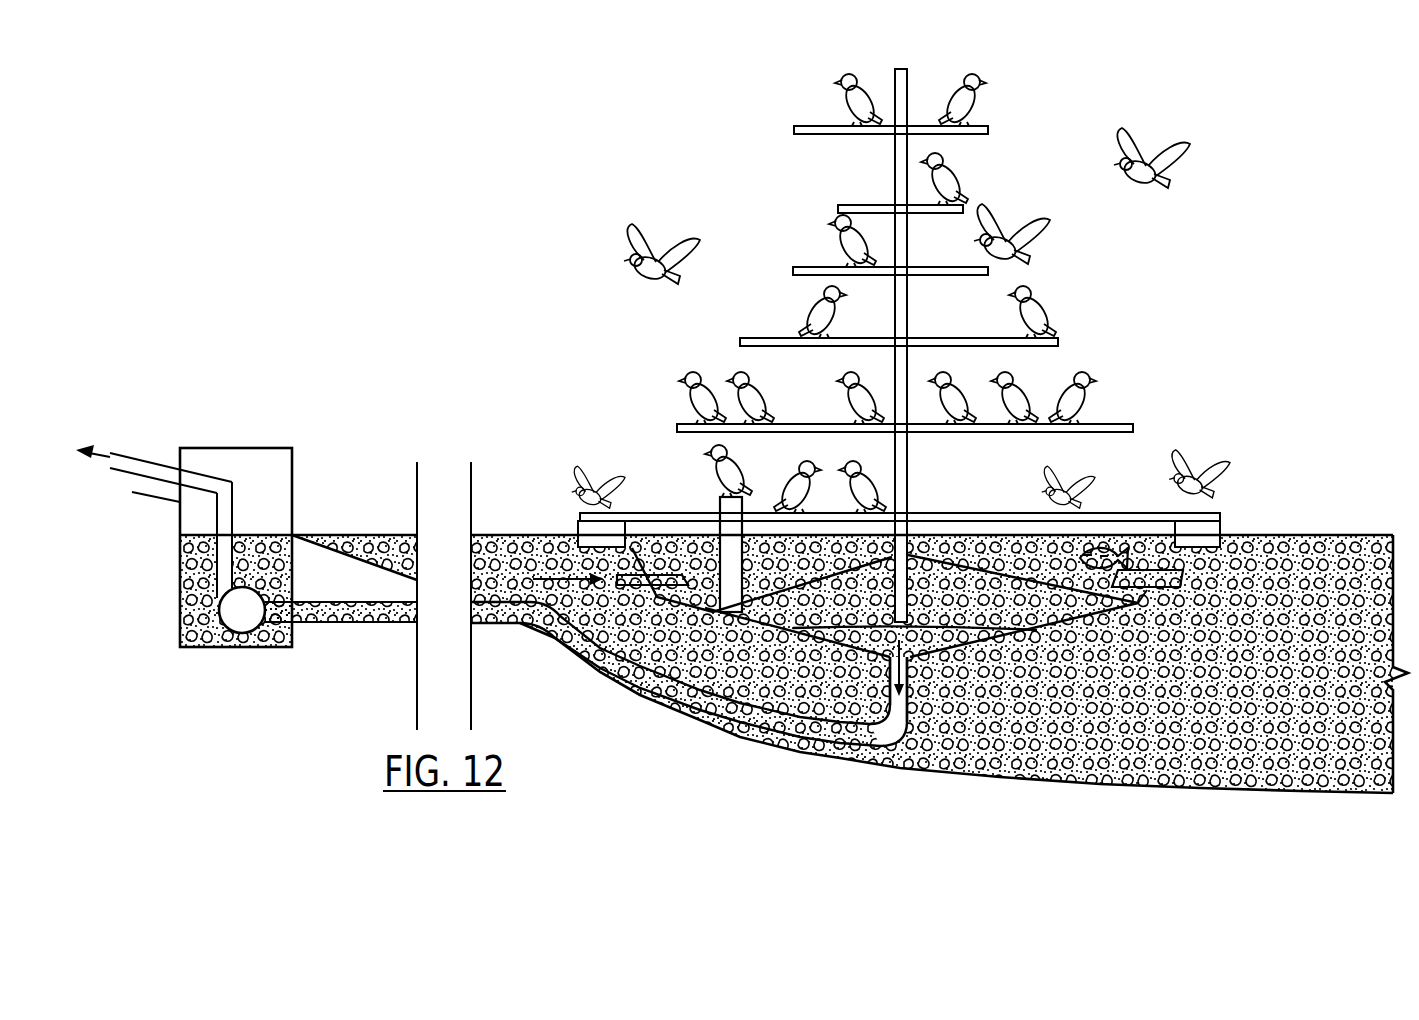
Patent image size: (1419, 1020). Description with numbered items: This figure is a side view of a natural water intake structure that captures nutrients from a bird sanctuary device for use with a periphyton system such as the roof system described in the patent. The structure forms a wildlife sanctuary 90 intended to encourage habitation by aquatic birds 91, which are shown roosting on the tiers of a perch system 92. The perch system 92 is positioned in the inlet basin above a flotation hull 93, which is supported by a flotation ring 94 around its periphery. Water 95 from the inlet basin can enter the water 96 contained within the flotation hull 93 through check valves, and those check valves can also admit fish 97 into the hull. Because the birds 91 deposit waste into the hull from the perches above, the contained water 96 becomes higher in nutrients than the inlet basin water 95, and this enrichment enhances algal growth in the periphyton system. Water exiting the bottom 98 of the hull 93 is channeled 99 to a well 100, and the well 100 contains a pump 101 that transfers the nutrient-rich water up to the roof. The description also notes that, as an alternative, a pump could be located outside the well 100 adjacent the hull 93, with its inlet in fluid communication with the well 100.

The wildlife sanctuary 90 is at (698, 200).
The aquatic birds 91 is at (903, 69).
The perch system 92 is at (943, 193).
The flotation hull 93 is at (1017, 633).
The flotation ring 94 is at (745, 600).
The water from the inlet basin 95 is at (515, 575).
The contained water 96 is at (714, 571).
The fish 97 is at (1105, 562).
The bottom of the hull 98 is at (907, 673).
The channel 99 is at (727, 702).
The well 100 is at (273, 633).
The pump 101 is at (258, 620).